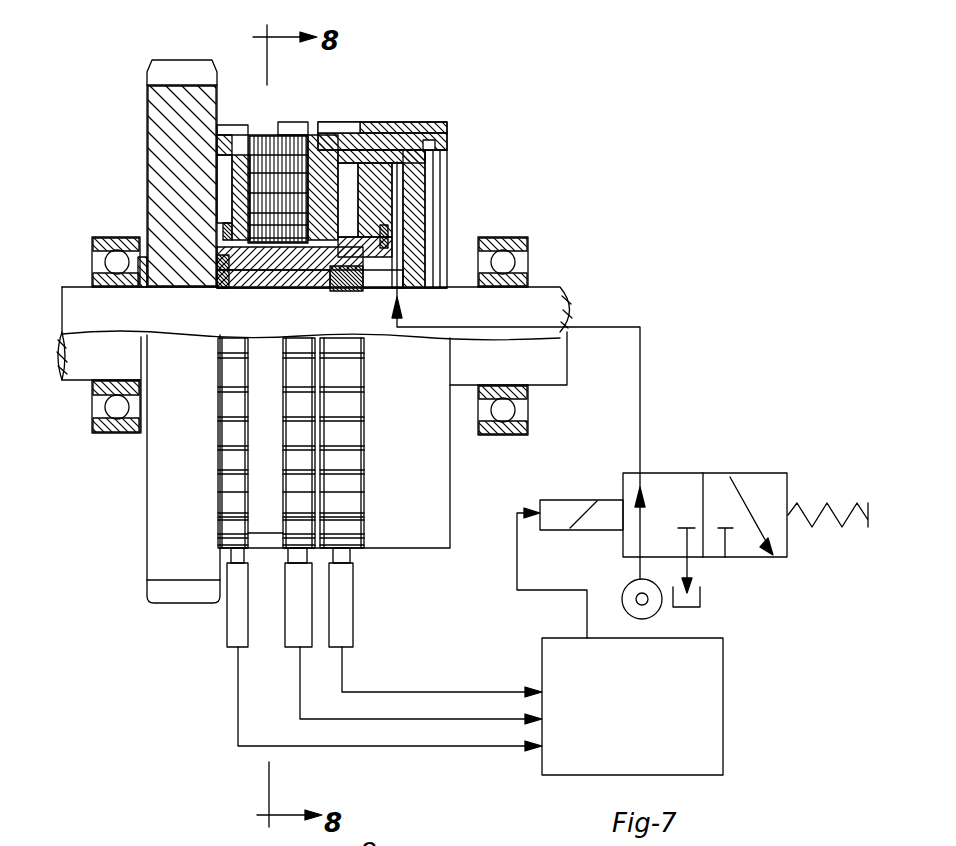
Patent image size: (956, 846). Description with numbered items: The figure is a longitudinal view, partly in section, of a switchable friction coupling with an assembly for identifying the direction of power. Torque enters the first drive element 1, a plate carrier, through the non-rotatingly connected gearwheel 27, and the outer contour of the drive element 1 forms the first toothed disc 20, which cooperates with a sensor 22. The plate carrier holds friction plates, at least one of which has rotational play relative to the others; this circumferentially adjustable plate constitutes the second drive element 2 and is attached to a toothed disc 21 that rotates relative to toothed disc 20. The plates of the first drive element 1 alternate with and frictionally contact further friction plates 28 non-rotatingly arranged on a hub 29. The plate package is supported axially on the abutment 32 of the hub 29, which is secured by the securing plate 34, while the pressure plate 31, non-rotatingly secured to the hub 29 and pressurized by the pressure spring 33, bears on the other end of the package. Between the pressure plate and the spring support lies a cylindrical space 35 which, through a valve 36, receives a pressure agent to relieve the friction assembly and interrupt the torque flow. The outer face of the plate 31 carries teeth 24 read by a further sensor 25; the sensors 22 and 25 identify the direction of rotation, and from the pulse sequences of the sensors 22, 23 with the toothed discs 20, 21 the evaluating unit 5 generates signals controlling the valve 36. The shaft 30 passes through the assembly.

The first drive element 1 is at (223, 200).
The second drive element 2 is at (283, 133).
The evaluating unit 5 is at (650, 718).
The first toothed disc 20 is at (233, 490).
The toothed disc 21 is at (247, 425).
The sensor 22 is at (237, 617).
The sensor 23 is at (305, 615).
The teeth 24 is at (353, 462).
The further sensor 25 is at (347, 633).
The gearwheel 27 is at (168, 77).
The further friction plates 28 is at (240, 198).
The hub 29 is at (227, 268).
The shaft 30 is at (520, 307).
The pressure plate 31 is at (412, 122).
The abutment 32 is at (222, 136).
The pressure spring 33 is at (352, 222).
The securing plate 34 is at (227, 233).
The cylindrical space 35 is at (417, 217).
The valve 36 is at (757, 497).